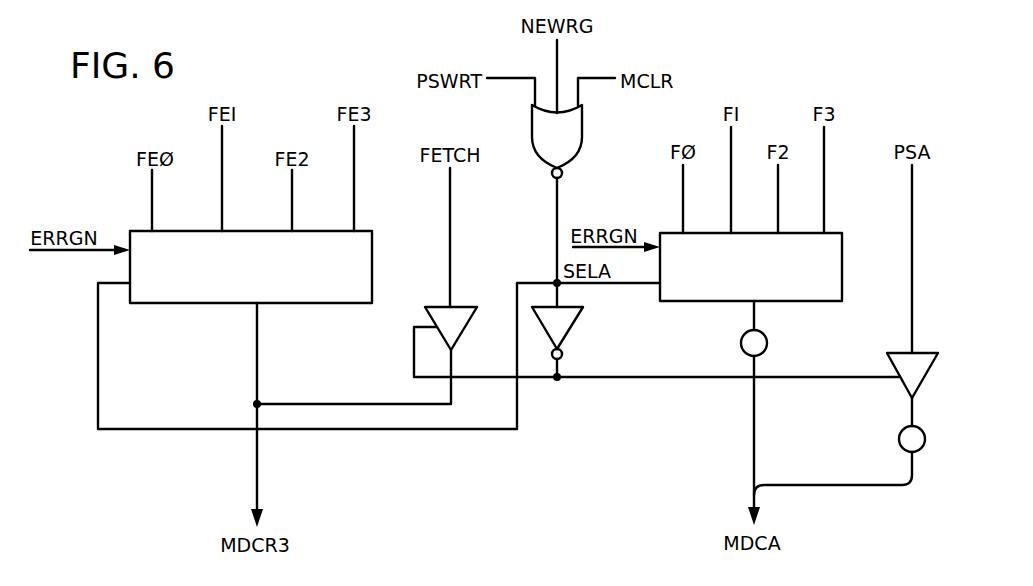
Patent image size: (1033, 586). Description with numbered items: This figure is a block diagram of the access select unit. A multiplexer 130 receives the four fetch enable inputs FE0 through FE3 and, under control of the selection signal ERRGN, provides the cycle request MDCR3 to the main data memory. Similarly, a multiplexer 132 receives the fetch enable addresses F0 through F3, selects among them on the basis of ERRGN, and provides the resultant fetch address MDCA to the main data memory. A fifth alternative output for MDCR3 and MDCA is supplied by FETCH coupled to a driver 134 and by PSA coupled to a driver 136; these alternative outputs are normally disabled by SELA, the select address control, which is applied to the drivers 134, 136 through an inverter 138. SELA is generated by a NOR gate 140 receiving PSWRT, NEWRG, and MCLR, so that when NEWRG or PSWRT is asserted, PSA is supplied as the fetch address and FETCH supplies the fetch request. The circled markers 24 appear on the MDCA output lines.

The multiplexer 130 is at (188, 303).
The multiplexer 132 is at (813, 301).
The driver 134 is at (466, 322).
The driver 136 is at (924, 375).
The inverter 138 is at (575, 318).
The NOR gate 140 is at (532, 128).
The 24-bit data bus 24 is at (833, 391).